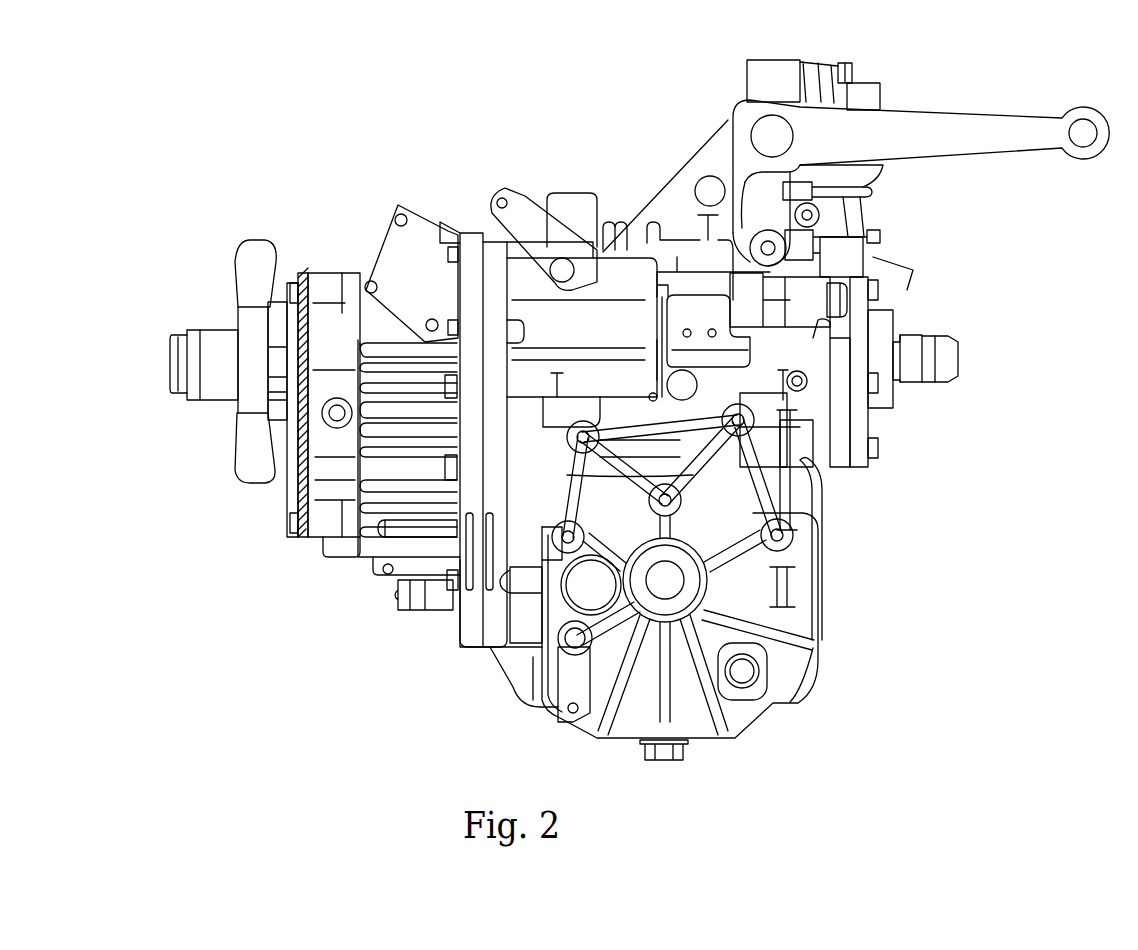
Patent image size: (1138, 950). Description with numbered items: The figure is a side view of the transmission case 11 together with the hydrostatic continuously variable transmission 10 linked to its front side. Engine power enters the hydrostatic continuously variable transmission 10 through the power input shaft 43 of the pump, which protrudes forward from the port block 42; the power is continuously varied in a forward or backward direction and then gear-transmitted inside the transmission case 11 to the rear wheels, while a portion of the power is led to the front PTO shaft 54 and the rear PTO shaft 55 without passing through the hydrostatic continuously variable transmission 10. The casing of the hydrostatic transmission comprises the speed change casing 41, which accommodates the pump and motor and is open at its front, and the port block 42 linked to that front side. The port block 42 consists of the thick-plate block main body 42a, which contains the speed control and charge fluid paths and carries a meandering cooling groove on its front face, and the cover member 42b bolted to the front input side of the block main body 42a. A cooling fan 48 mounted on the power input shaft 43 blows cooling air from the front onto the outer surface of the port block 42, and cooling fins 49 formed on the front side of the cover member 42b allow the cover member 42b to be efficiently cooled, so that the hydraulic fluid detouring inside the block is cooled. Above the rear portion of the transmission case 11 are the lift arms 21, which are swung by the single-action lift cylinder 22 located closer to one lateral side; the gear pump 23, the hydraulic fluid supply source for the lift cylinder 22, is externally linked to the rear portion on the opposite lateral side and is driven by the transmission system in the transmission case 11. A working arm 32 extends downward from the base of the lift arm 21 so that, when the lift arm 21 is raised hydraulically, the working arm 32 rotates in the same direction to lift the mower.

The hydrostatic continuously variable transmission 10 is at (337, 262).
The transmission case 11 is at (785, 672).
The lift arm 21 is at (1013, 122).
The lift cylinder 22 is at (870, 88).
The gear pump 23 is at (708, 283).
The working arm 32 is at (737, 193).
The speed change casing 41 is at (395, 522).
The port block 42 is at (294, 458).
The block main body 42a is at (325, 537).
The cover member 42b is at (300, 497).
The power input shaft 43 is at (208, 395).
The cooling fan 48 is at (258, 243).
The cooling fins 49 is at (278, 308).
The front PTO shaft 54 is at (438, 605).
The rear PTO shaft 55 is at (960, 358).